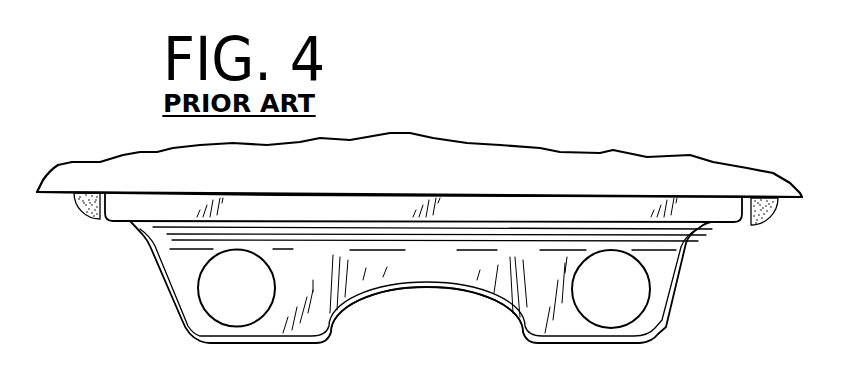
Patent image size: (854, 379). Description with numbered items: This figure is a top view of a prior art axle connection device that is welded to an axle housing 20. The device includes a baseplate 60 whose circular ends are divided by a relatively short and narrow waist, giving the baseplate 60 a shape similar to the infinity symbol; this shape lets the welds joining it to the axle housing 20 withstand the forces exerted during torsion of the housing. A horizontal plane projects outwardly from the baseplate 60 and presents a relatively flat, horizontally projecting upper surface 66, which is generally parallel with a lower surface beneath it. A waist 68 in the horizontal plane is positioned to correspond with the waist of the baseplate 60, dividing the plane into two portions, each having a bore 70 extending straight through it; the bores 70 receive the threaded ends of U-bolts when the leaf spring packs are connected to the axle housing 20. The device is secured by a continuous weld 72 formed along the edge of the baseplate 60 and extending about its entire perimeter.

The axle housing 20 is at (482, 162).
The baseplate 60 is at (724, 212).
The upper surface 66 is at (318, 281).
The waist 68 is at (446, 272).
The bore 70 is at (257, 296).
The continuous weld 72 is at (88, 212).